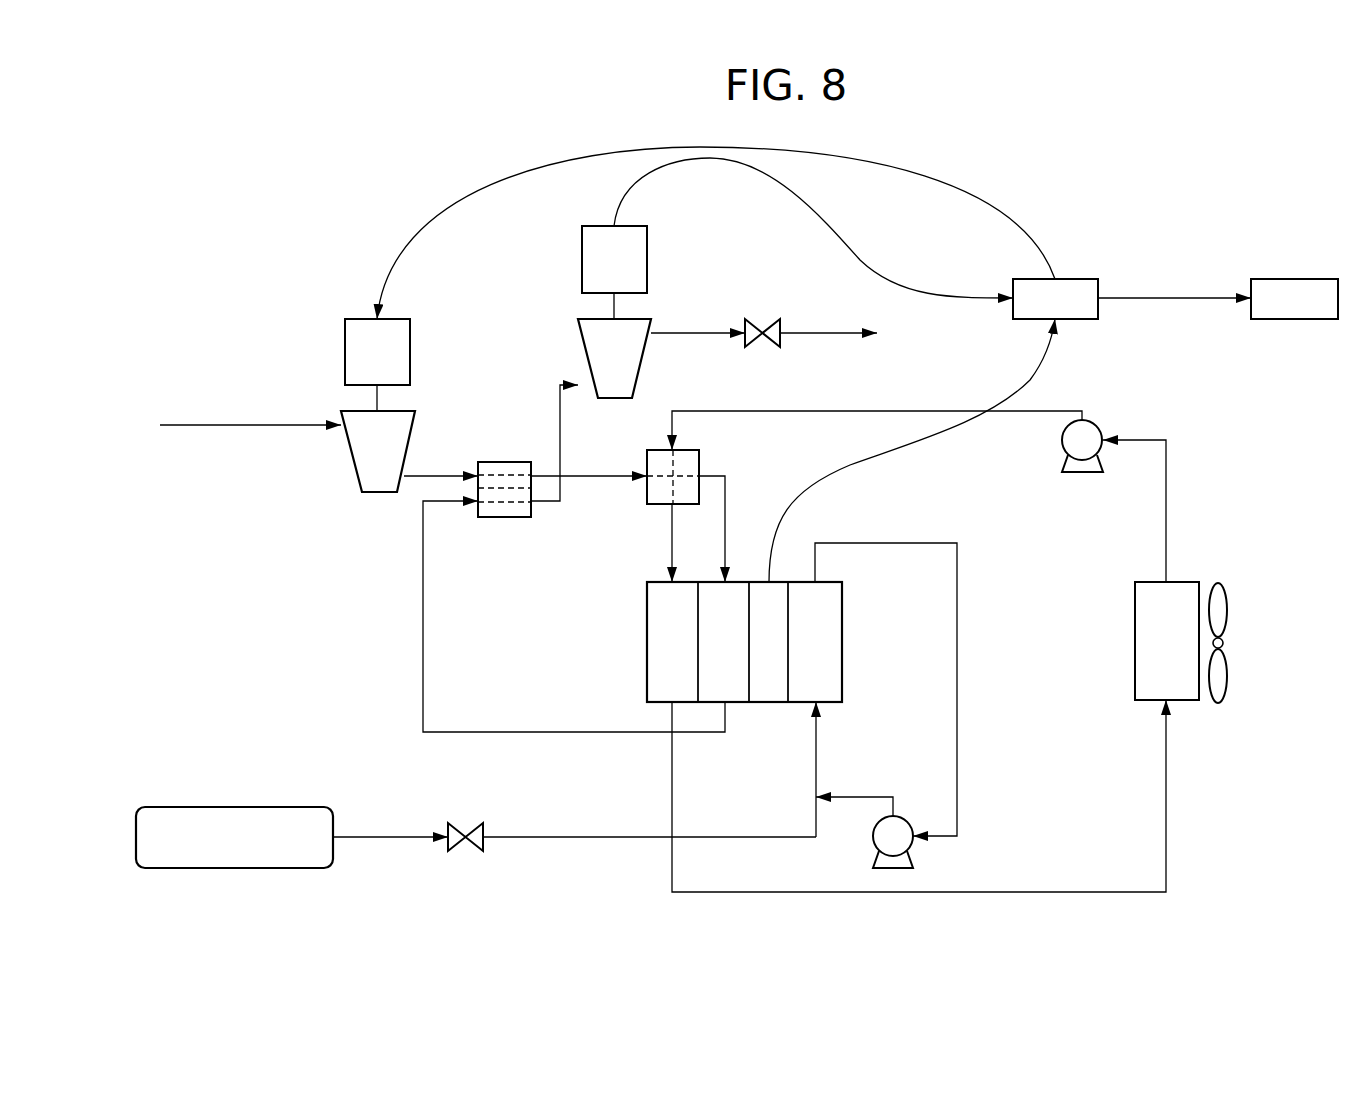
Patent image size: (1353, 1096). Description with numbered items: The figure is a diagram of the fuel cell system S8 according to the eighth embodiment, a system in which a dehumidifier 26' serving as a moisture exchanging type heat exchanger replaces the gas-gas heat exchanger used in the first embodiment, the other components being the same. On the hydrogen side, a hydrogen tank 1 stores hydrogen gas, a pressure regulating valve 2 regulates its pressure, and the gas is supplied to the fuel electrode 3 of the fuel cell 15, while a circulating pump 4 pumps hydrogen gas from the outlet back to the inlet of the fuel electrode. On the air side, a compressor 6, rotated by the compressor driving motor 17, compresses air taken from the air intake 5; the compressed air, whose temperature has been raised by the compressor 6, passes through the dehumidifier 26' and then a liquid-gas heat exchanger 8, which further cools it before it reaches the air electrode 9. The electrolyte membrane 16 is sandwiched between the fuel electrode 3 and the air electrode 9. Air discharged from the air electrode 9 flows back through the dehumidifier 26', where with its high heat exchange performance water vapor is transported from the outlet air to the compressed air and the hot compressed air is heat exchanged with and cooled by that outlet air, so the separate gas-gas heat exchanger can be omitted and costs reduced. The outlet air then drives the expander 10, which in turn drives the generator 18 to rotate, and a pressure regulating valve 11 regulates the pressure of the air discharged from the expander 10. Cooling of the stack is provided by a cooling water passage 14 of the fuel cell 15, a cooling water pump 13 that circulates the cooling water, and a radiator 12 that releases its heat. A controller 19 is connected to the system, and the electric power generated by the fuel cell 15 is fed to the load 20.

The fuel cell system S8 is at (298, 220).
The hydrogen tank 1 is at (232, 807).
The pressure regulating valve 2 is at (462, 832).
The fuel electrode 3 is at (815, 642).
The circulating pump 4 is at (906, 818).
The air intake 5 is at (240, 426).
The compressor 6 is at (352, 462).
The liquid-gas heat exchanger 8 is at (647, 460).
The air electrode 9 is at (723, 642).
The expander 10 is at (588, 358).
The pressure regulating valve 11 is at (763, 320).
The radiator 12 is at (1135, 618).
The cooling water pump 13 is at (1082, 474).
The cooling water passage 14 is at (672, 642).
The fuel cell 15 is at (796, 636).
The electrolyte membrane 16 is at (768, 642).
The compressor driving motor 17 is at (345, 345).
The generator 18 is at (582, 250).
The controller 19 is at (1075, 279).
The load 20 is at (1303, 279).
The dehumidifier 26' is at (501, 457).